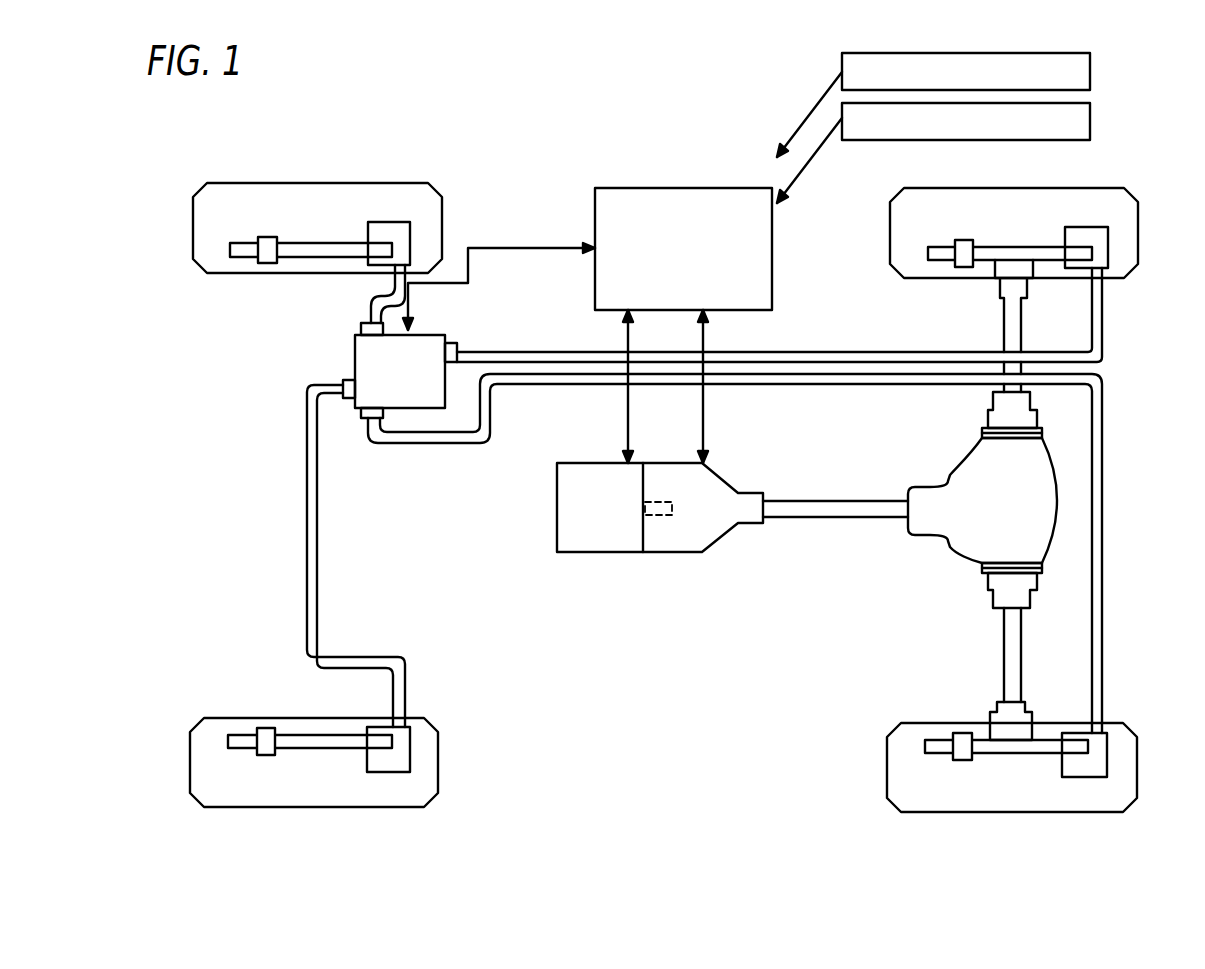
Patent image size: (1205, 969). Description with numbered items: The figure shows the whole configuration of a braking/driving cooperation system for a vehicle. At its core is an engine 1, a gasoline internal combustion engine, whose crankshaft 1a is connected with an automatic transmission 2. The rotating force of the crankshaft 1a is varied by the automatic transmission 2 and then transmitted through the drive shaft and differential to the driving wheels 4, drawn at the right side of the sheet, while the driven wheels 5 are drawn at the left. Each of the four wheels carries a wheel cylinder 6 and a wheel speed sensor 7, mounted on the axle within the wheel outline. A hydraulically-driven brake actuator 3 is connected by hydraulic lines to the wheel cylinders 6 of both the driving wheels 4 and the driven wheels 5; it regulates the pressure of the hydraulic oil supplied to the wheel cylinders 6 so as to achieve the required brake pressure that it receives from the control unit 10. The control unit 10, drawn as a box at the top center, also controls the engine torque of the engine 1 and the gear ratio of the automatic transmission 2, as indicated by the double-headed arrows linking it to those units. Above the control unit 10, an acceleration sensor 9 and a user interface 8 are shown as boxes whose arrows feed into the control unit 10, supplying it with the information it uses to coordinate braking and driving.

The engine 1 is at (580, 552).
The crankshaft 1a is at (670, 518).
The automatic transmission 2 is at (725, 482).
The brake actuator 3 is at (430, 333).
The driving wheels 4 is at (890, 228).
The driven wheels 5 is at (193, 228).
The wheel cylinders 6 is at (390, 222).
The wheel speed sensors 7 is at (268, 237).
The user interface 8 is at (1090, 122).
The acceleration sensor 9 is at (1090, 72).
The control unit 10 is at (772, 292).